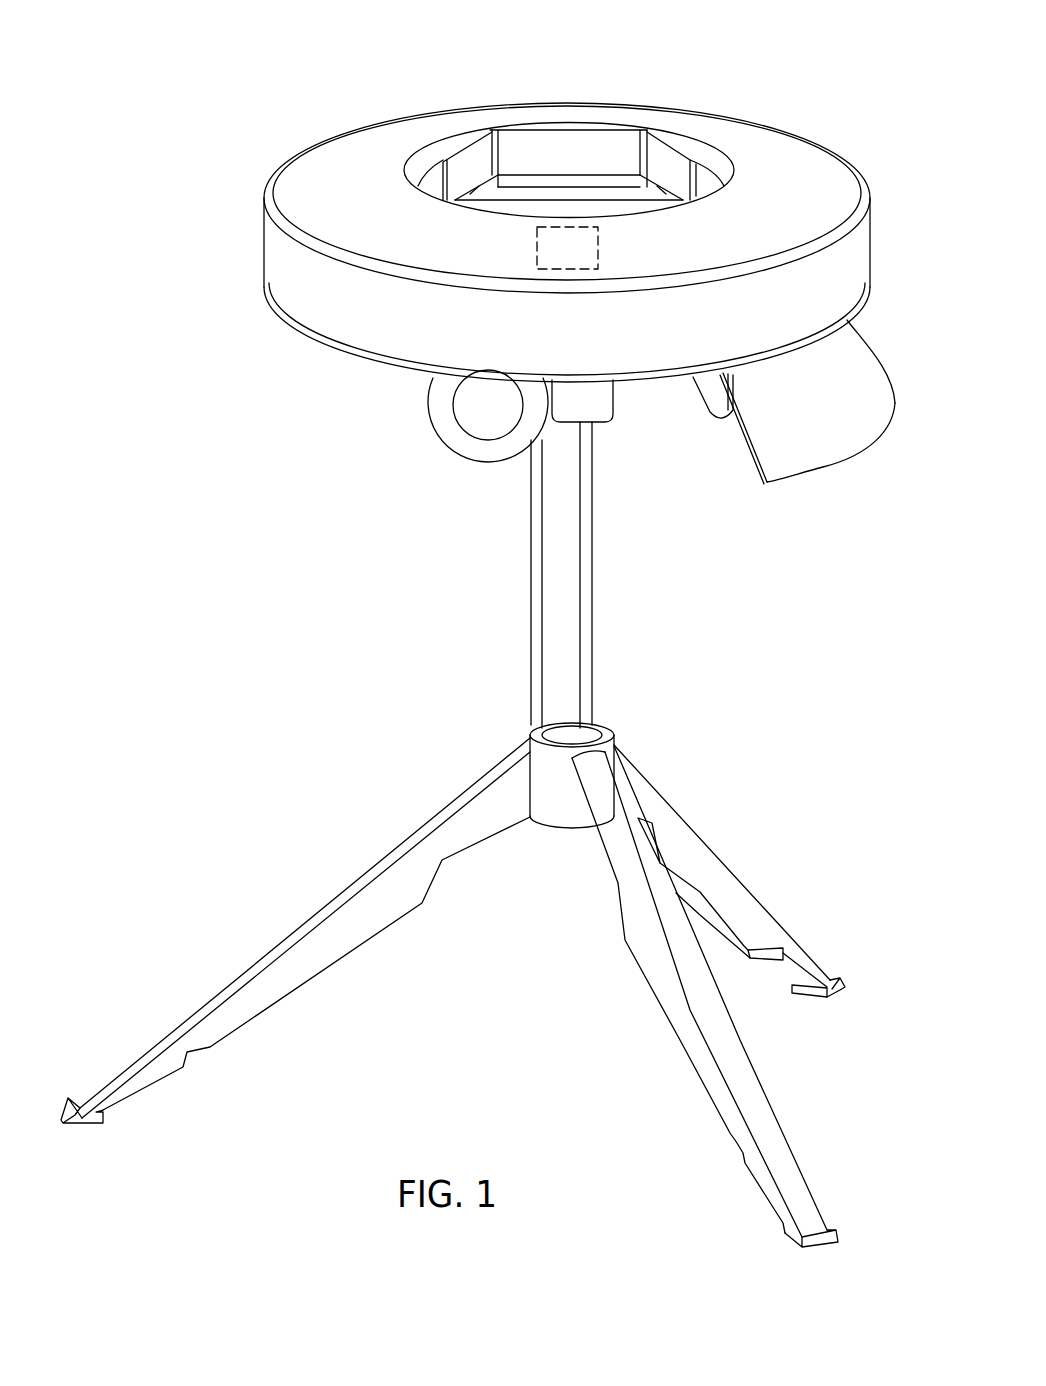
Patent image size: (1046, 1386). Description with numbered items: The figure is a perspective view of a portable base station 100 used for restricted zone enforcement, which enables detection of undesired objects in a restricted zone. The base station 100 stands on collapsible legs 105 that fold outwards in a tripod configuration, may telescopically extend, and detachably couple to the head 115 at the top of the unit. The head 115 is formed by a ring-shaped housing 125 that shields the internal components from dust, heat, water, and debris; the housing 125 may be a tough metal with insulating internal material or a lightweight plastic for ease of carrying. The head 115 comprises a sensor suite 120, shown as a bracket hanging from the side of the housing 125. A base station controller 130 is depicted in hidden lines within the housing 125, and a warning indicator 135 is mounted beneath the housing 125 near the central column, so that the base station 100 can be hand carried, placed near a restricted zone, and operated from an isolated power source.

The base station 100 is at (282, 57).
The collapsible legs 105 is at (762, 157).
The head 115 is at (803, 214).
The sensor suite 120 is at (837, 392).
The housing 125 is at (360, 176).
The base station controller 130 is at (590, 258).
The warning indicator 135 is at (455, 437).